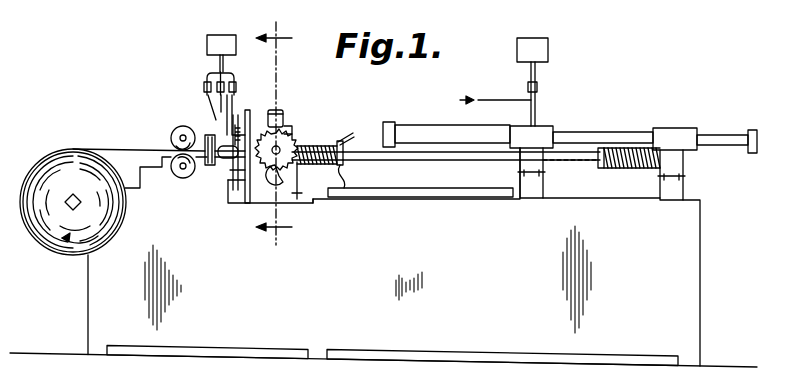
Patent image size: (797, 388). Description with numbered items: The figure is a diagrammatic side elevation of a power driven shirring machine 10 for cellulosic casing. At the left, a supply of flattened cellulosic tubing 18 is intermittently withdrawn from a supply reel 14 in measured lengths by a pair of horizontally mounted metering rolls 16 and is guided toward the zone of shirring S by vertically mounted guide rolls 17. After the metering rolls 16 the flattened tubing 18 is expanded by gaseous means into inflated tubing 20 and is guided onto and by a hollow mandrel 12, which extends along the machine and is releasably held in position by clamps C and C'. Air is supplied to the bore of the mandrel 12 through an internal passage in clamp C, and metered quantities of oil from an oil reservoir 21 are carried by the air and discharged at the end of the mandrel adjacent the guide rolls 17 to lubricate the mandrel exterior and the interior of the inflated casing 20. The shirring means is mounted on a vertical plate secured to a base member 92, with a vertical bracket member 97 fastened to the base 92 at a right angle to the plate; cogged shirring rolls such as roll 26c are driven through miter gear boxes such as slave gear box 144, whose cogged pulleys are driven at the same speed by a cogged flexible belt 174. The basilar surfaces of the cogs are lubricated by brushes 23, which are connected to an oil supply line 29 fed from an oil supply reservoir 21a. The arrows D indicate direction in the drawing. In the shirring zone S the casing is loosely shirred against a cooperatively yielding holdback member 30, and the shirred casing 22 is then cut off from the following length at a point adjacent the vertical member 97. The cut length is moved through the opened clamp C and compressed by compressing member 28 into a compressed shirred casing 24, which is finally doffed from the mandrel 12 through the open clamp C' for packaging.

The power driven shirring machine 10 is at (123, 272).
The supply reel 14 is at (52, 165).
The cellulosic tubing 18 is at (120, 149).
The metering rolls 16 is at (175, 130).
The guide rolls 17 is at (210, 137).
The hollow mandrel 12 is at (228, 140).
The inflated tubing 20 is at (223, 165).
The oil supply reservoir 21a is at (207, 40).
The oil supply line 29 is at (228, 108).
The slave driven miter gear box 144 is at (272, 110).
The brushes 23 is at (254, 153).
The cogged flexible belt 174 is at (233, 187).
The cogged shirring roll 26c is at (287, 126).
The zone of shirring S is at (298, 111).
The shirred casing 22 is at (316, 142).
The holdback member 30 is at (343, 140).
The base member 92 is at (307, 205).
The vertical bracket member 97 is at (296, 200).
The direction of movement D is at (275, 135).
The clamp C is at (477, 130).
The oil reservoir 21 is at (548, 44).
The clamp C' is at (655, 148).
The compressing member 28 is at (600, 148).
The compressed shirred casing 24 is at (633, 168).